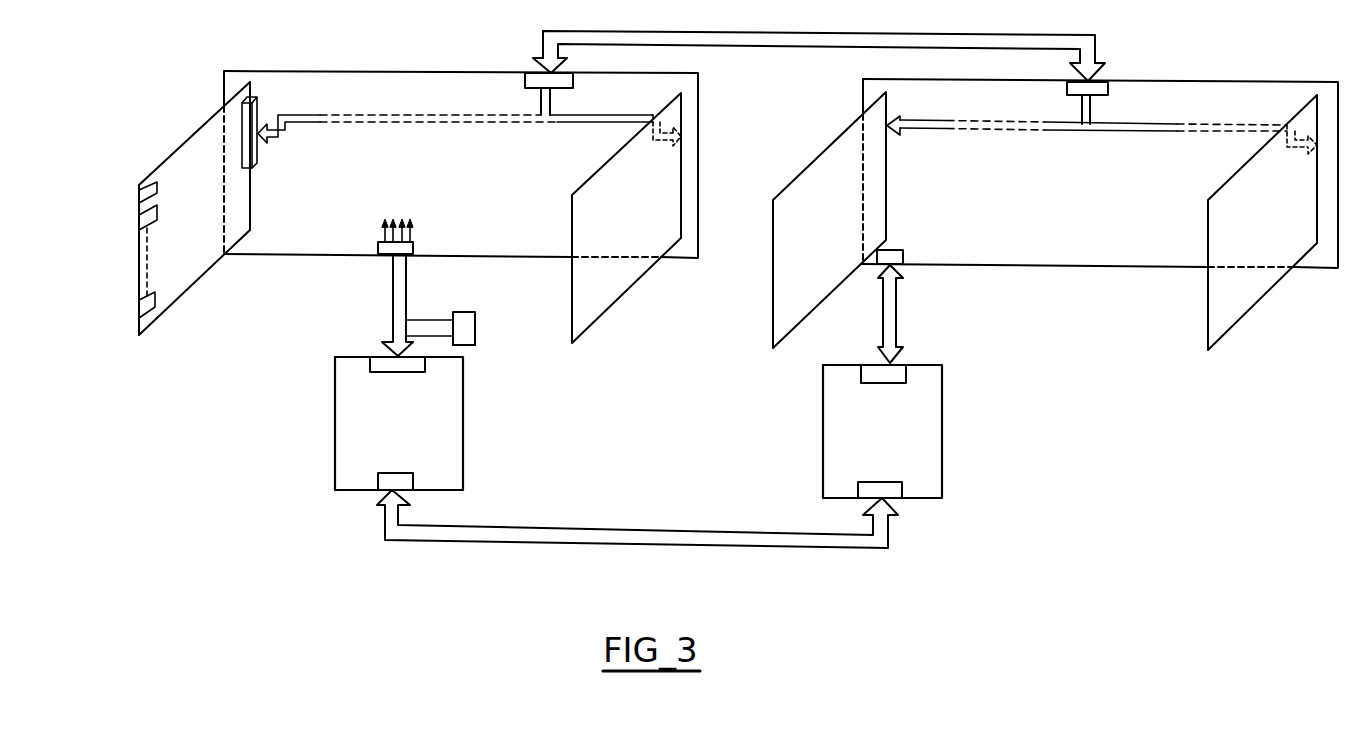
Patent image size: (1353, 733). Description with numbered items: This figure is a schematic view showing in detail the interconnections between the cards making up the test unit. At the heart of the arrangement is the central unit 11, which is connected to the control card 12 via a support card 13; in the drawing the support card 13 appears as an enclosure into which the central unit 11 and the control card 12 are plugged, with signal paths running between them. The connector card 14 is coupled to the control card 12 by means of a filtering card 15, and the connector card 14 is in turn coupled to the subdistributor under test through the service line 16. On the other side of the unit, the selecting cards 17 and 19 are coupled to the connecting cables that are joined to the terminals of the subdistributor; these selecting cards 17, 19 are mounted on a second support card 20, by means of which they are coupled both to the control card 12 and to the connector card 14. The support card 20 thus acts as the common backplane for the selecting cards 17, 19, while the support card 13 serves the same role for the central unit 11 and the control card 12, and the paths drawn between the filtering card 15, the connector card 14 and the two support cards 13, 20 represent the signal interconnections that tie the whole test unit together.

The central unit 11 is at (1232, 288).
The control card 12 is at (785, 292).
The support card 13 is at (1018, 238).
The connector card 14 is at (448, 435).
The filtering card 15 is at (925, 440).
The service line 16 is at (475, 328).
The selecting card 17 is at (187, 262).
The selecting card 19 is at (618, 275).
The support card 20 is at (405, 88).